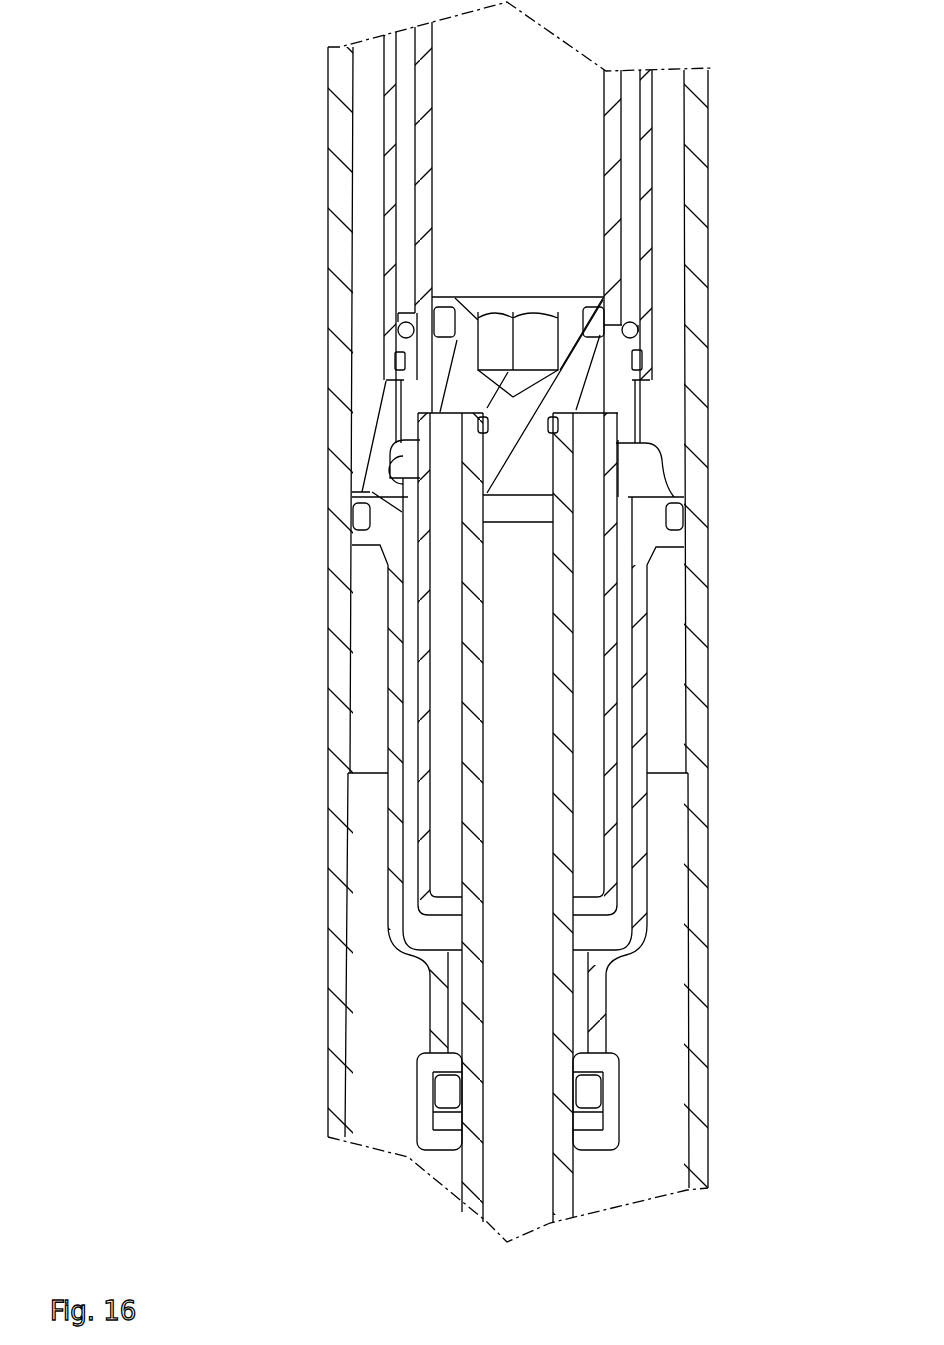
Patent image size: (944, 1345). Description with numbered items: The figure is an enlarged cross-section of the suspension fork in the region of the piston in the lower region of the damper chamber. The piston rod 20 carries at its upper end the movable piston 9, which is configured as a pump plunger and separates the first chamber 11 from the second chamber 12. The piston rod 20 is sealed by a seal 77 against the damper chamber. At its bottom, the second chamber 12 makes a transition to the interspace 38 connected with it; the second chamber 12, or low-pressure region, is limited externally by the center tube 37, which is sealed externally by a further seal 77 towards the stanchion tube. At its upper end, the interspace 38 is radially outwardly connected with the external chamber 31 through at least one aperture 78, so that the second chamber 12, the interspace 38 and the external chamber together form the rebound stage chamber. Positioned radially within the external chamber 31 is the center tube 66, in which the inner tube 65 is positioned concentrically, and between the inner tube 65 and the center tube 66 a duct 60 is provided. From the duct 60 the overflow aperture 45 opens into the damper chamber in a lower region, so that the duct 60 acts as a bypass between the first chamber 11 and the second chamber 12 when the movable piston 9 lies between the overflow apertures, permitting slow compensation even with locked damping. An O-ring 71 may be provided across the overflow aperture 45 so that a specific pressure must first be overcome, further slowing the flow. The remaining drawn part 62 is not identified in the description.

The movable piston 9 is at (565, 390).
The first chamber 11 is at (477, 82).
The second chamber 12 is at (455, 675).
The piston rod 20 is at (520, 970).
The external chamber 31 is at (667, 247).
The center tube 37 is at (640, 712).
The interspace 38 is at (625, 850).
The overflow aperture 45 is at (630, 322).
The duct 60 is at (707, 256).
The lower sleeve 62 is at (670, 795).
The inner tube 65 is at (615, 90).
The center tube 66 is at (648, 185).
The O-ring 71 is at (640, 335).
The seal 77 is at (672, 522).
The aperture 78 is at (640, 472).